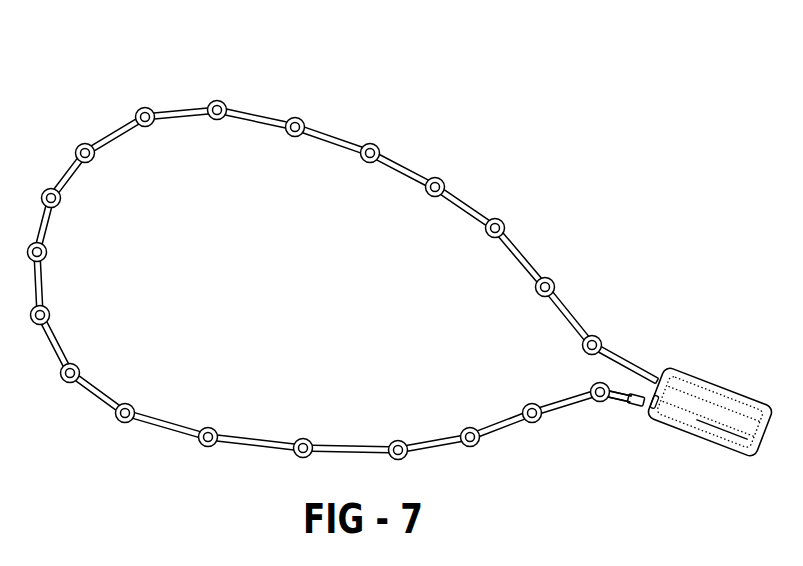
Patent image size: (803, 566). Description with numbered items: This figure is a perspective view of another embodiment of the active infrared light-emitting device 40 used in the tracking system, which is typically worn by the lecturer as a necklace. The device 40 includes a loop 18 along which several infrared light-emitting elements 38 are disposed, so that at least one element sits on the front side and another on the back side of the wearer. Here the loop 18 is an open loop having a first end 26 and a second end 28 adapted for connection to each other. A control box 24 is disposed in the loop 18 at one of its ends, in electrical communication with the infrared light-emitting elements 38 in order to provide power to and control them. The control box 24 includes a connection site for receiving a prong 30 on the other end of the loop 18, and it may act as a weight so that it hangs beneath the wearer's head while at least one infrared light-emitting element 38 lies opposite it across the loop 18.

The active infrared light-emitting device 40 is at (343, 261).
The loop 18 is at (343, 261).
The infrared light-emitting elements 38 is at (485, 233).
The first end 26 is at (613, 351).
The control box 24 is at (692, 389).
The second end 28 is at (620, 402).
The prong 30 is at (635, 405).